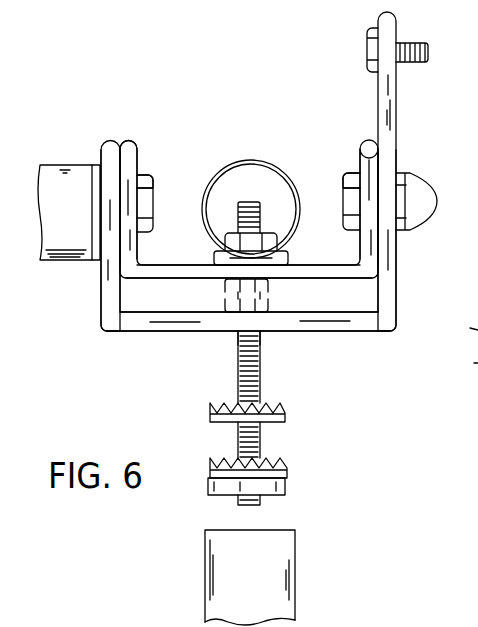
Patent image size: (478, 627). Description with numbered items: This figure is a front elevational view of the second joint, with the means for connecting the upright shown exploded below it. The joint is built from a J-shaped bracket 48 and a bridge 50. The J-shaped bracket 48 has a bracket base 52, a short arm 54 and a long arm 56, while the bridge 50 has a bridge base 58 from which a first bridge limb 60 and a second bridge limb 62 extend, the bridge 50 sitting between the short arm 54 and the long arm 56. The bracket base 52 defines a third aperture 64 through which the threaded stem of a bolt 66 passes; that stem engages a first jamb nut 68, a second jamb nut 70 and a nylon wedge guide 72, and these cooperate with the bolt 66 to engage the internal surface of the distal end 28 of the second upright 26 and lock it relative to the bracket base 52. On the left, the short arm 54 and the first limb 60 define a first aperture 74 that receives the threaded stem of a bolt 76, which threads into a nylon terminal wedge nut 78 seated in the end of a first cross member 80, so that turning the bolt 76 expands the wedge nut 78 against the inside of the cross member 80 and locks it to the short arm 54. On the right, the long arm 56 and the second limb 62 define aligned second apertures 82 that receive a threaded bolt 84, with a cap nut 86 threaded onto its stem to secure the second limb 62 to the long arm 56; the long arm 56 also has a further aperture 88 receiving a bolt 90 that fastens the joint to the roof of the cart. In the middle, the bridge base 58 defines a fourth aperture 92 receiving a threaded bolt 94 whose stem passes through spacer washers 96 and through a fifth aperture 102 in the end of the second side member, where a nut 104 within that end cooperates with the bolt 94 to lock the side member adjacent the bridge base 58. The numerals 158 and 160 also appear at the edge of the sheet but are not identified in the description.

The second upright 26 is at (292, 612).
The distal end of the second upright 28 is at (292, 556).
The J-shaped bracket 48 is at (410, 106).
The bridge 50 is at (153, 256).
The bracket base 52 is at (343, 324).
The short arm 54 is at (105, 288).
The long arm 56 is at (392, 275).
The bridge base 58 is at (318, 279).
The first bridge limb 60 is at (132, 151).
The second bridge limb 62 is at (365, 141).
The third aperture 64 is at (238, 332).
The bolt 66 is at (262, 386).
The first jamb nut 68 is at (212, 414).
The second jamb nut 70 is at (212, 467).
The nylon wedge guide 72 is at (287, 489).
The first aperture 74 is at (151, 201).
The bolt 76 is at (152, 189).
The nylon terminal wedge nut 78 is at (94, 165).
The first cross member 80 is at (63, 170).
The second apertures 82 is at (353, 205).
The threaded bolt 84 is at (347, 175).
The cap nut 86 is at (417, 190).
The further aperture 88 is at (368, 45).
The bolt 90 is at (368, 55).
The fourth aperture 92 is at (232, 289).
The threaded bolt 94 is at (250, 202).
The spacer washers 96 is at (218, 259).
The fifth aperture 102 is at (281, 258).
The nut 104 is at (268, 242).
The lead wire 158 is at (477, 330).
The lead wire 160 is at (477, 363).